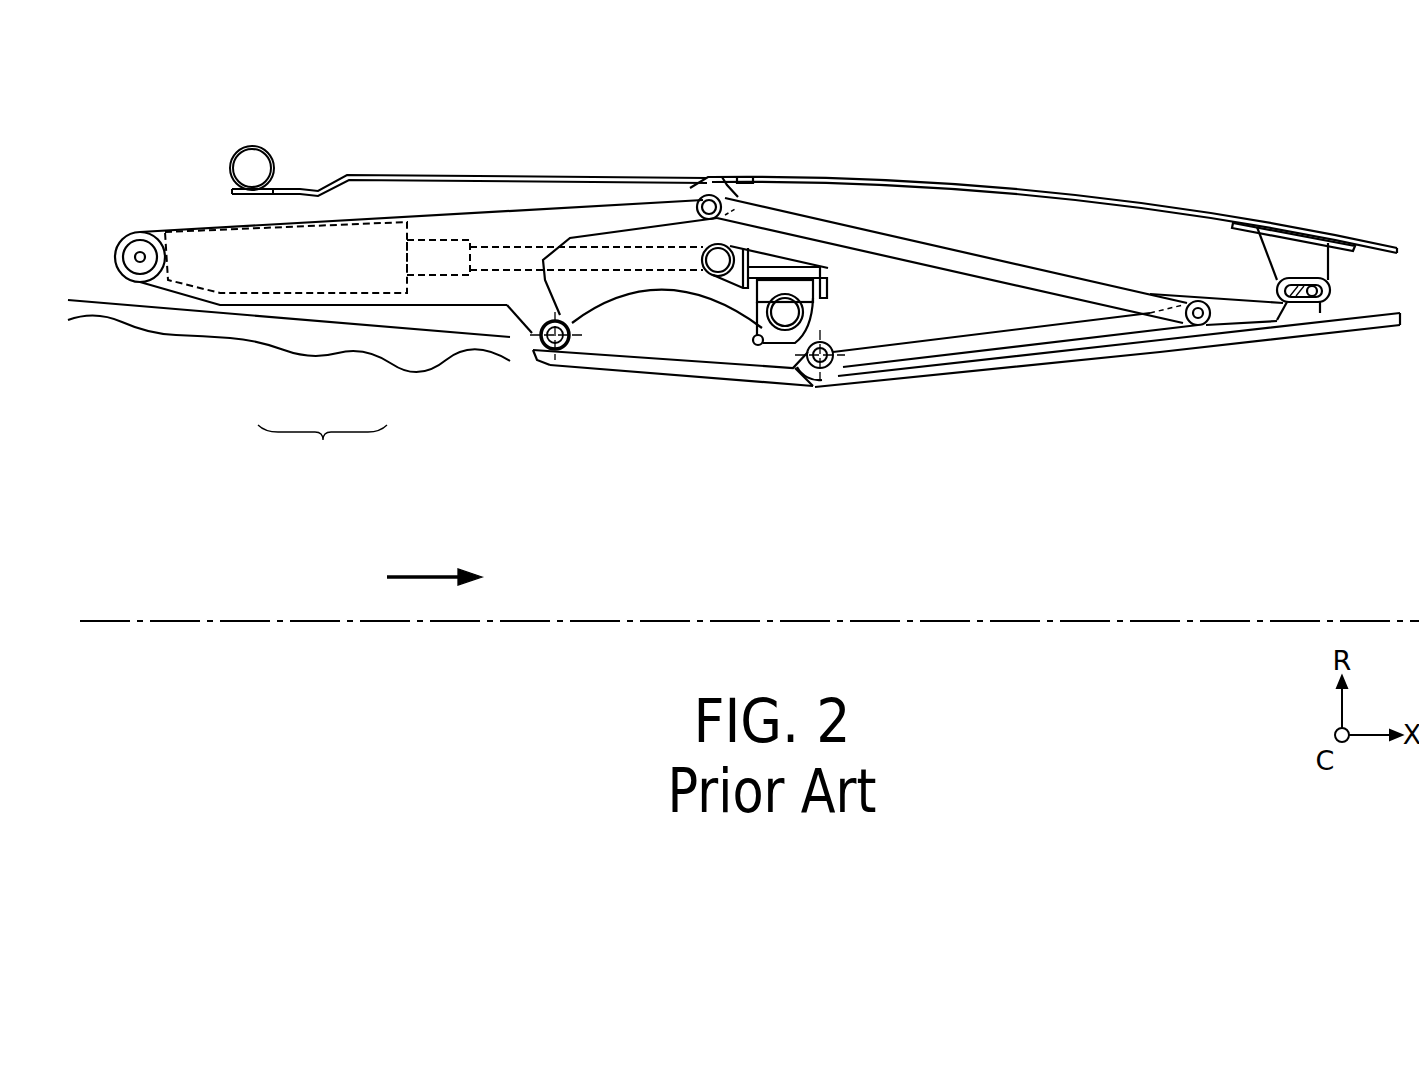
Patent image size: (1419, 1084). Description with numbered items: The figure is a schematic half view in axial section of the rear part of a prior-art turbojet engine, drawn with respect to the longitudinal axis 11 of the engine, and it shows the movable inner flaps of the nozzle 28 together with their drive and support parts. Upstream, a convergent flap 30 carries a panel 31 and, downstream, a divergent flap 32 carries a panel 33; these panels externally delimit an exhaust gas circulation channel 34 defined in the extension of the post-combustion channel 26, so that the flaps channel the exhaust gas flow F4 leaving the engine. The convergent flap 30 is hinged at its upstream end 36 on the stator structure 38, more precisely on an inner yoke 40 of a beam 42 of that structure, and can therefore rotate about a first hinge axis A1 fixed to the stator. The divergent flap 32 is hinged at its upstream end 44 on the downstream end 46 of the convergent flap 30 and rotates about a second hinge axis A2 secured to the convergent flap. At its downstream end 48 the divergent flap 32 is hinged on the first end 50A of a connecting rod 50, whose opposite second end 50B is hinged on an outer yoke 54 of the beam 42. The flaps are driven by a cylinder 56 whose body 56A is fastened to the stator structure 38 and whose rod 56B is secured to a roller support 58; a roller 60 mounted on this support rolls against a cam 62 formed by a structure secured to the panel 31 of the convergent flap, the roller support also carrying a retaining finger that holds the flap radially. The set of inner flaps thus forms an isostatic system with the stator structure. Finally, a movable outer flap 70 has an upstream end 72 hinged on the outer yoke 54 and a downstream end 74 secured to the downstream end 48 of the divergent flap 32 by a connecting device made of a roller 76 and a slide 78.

The longitudinal axis 11 is at (1110, 620).
The post-combustion channel 26 is at (160, 459).
The mechanism assembly 28 is at (963, 428).
The convergent flap 30 is at (693, 390).
The panel 31 is at (760, 378).
The divergent flap 32 is at (1090, 372).
The panel 33 is at (1156, 346).
The exhaust gas circulation channel 34 is at (894, 538).
The upstream end of convergent flap 36 is at (568, 348).
The stator structure 38 is at (433, 107).
The inner yoke 40 is at (535, 315).
The beam 42 is at (440, 207).
The upstream end of divergent flap 44 is at (835, 375).
The downstream end of convergent flap 46 is at (795, 373).
The downstream end of divergent flap 48 is at (1258, 320).
The connecting rod 50 is at (993, 257).
The first end of connecting rod 50A is at (1186, 300).
The second end of connecting rod 50B is at (737, 198).
The outer yoke 54 is at (668, 212).
The cylinder 56 is at (322, 449).
The cylinder body 56A is at (315, 293).
The cylinder rod 56B is at (495, 272).
The roller support 58 is at (790, 250).
The roller 60 is at (818, 307).
The cam 62 is at (655, 293).
The movable outer flap 70 is at (1092, 188).
The upstream end of outer flap 72 is at (725, 210).
The downstream end of outer flap 74 is at (1298, 242).
The roller 76 is at (1313, 298).
The slide 78 is at (1285, 276).
The first hinge axis A1 is at (554, 362).
The first hinge axis A2 is at (845, 345).
The exhaust gas flow F4 is at (420, 576).